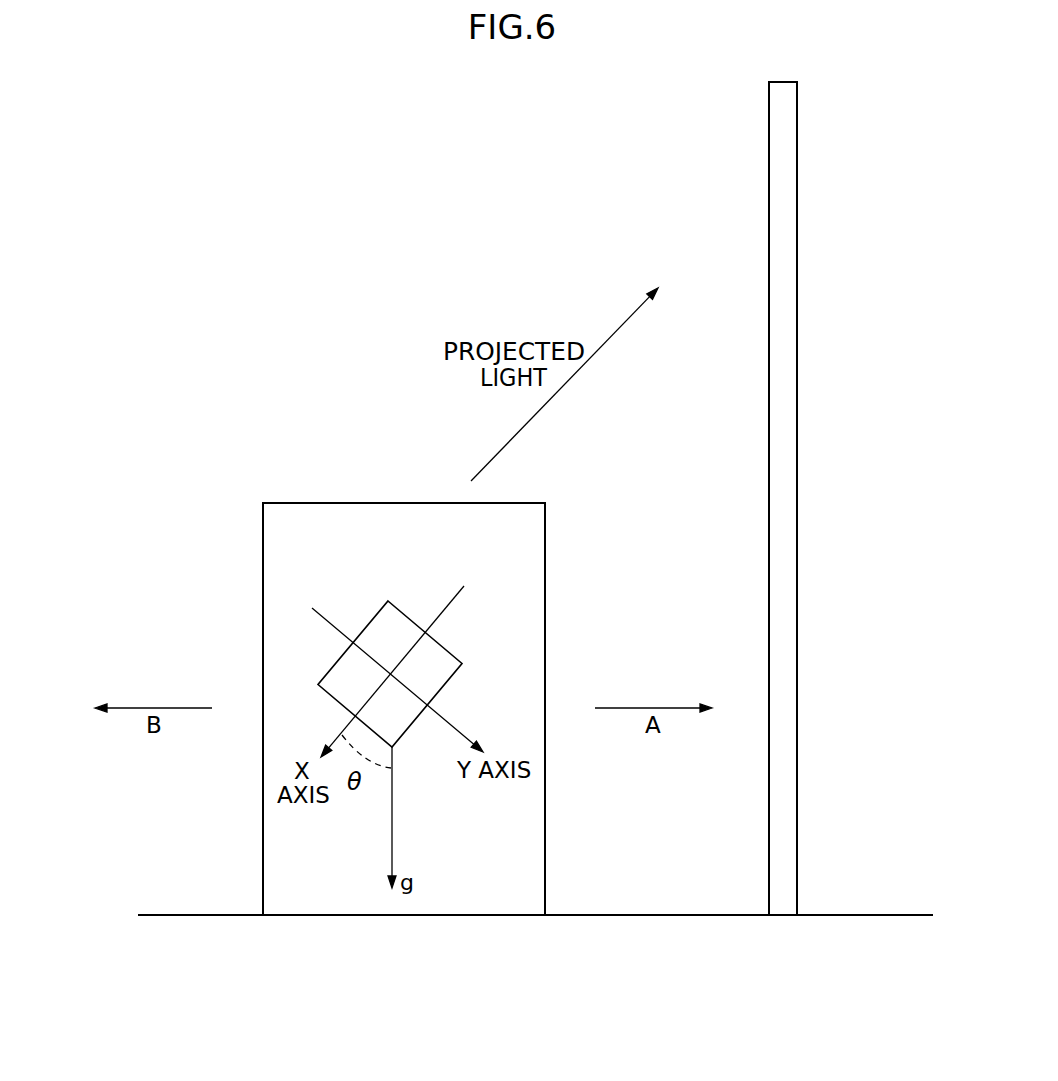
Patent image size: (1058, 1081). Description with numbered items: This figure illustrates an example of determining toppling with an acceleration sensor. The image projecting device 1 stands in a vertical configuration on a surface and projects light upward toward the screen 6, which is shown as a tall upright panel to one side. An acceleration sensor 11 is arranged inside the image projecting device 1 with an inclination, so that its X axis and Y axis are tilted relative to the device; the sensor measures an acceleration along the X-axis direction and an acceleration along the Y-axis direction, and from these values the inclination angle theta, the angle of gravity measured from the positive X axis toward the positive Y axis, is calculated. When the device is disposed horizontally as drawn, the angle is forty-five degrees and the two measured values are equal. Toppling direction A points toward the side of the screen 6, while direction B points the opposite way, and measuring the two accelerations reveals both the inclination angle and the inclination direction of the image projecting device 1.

The image projecting device 1 is at (263, 530).
The screen 6 is at (769, 153).
The acceleration sensor 11 is at (327, 673).